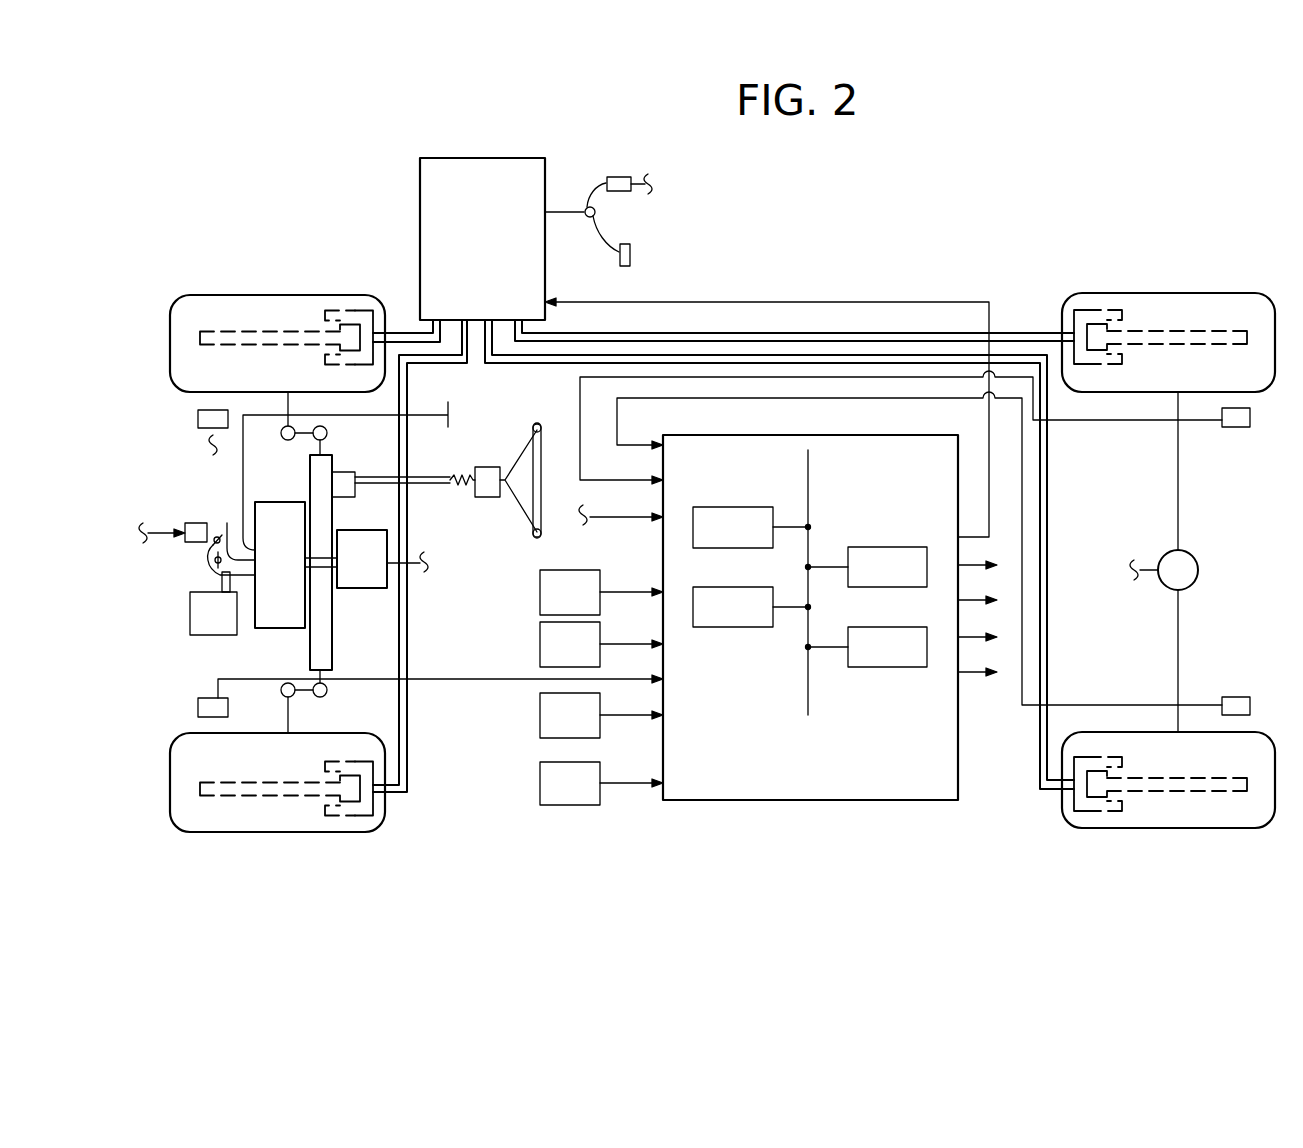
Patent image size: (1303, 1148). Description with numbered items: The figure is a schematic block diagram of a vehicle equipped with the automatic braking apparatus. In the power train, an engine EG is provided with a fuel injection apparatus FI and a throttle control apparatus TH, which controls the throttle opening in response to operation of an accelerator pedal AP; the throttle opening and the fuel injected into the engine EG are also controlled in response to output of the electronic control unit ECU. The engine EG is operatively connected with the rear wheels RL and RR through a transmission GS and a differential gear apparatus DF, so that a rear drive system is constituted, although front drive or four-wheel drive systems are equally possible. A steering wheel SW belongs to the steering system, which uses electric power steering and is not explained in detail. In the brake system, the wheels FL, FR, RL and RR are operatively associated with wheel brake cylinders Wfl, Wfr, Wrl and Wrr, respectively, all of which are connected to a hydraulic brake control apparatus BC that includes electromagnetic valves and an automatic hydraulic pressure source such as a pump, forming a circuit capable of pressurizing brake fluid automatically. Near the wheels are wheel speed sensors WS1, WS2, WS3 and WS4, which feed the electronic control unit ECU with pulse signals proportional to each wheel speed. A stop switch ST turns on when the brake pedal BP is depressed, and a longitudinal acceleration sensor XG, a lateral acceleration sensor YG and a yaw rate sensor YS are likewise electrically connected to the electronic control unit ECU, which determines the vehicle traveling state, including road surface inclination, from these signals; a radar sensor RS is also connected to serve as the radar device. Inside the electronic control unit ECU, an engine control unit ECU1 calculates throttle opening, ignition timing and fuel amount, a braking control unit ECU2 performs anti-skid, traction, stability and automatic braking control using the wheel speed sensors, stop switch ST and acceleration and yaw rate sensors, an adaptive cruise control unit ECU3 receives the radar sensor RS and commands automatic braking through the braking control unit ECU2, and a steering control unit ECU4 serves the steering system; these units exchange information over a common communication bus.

The hydraulic brake control apparatus BC is at (420, 207).
The stop switch ST is at (620, 178).
The brake pedal BP is at (627, 244).
The front right wheel FR is at (205, 295).
The front left wheel FL is at (205, 832).
The rear right wheel RR is at (1185, 295).
The rear left wheel RL is at (1192, 828).
The wheel brake cylinder Wfr is at (361, 312).
The wheel brake cylinder Wfl is at (362, 820).
The wheel brake cylinder Wrr is at (1083, 312).
The wheel brake cylinder Wrl is at (1079, 816).
The wheel speed sensor WS1 is at (200, 705).
The wheel speed sensor WS2 is at (198, 418).
The wheel speed sensor WS3 is at (1238, 698).
The wheel speed sensor WS4 is at (1236, 427).
The accelerator pedal AP is at (450, 405).
The throttle control apparatus TH is at (195, 522).
The fuel injection apparatus FI is at (213, 603).
The engine EG is at (292, 513).
The transmission GS is at (382, 559).
The steering wheel SW is at (541, 423).
The longitudinal acceleration sensor XG is at (601, 592).
The lateral acceleration sensor YG is at (601, 644).
The yaw rate sensor YS is at (601, 715).
The radar sensor RS is at (601, 783).
The electronic control unit ECU is at (788, 549).
The engine control unit ECU1 is at (752, 527).
The braking control unit ECU2 is at (752, 607).
The adaptive cruise control unit ECU3 is at (867, 567).
The steering control unit ECU4 is at (867, 647).
The differential gear apparatus DF is at (1164, 570).